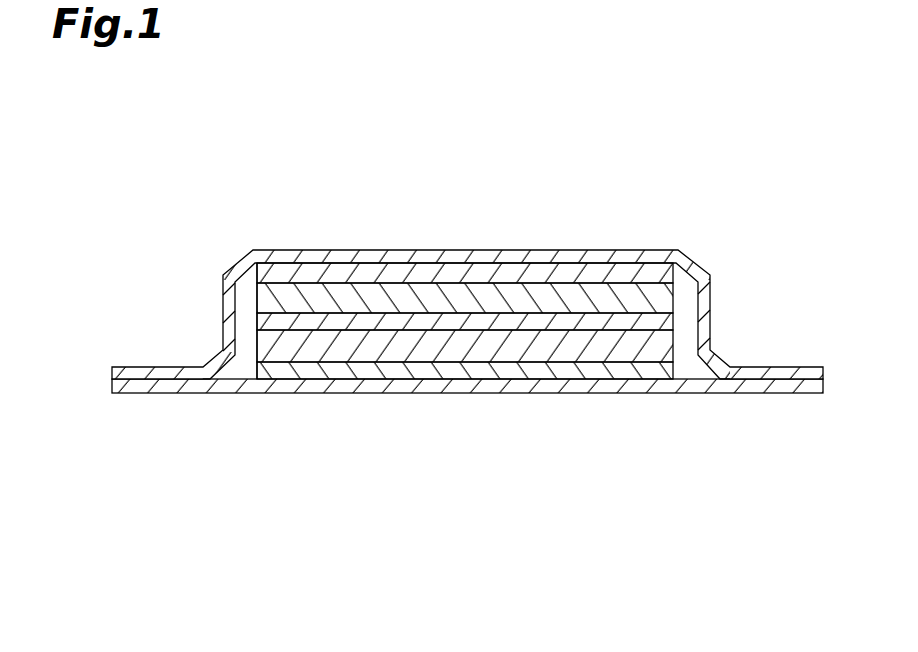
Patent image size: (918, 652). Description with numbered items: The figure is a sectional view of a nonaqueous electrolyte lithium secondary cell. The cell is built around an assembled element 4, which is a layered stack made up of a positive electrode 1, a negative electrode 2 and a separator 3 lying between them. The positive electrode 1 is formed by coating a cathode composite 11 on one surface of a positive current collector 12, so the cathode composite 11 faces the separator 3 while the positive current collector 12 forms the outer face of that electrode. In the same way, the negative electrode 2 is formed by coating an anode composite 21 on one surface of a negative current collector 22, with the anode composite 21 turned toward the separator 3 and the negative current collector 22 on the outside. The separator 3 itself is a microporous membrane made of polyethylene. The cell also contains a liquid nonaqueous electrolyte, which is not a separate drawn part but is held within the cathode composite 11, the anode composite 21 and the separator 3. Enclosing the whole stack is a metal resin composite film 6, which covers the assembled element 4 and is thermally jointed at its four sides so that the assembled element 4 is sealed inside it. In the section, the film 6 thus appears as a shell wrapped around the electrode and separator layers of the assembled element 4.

The positive electrode 1 is at (465, 215).
The cathode composite 11 is at (442, 291).
The positive current collector 12 is at (453, 270).
The negative electrode 2 is at (465, 410).
The anode composite 21 is at (433, 348).
The negative current collector 22 is at (407, 373).
The separator 3 is at (583, 323).
The assembled element 4 is at (252, 319).
The metal resin composite film 6 is at (705, 310).